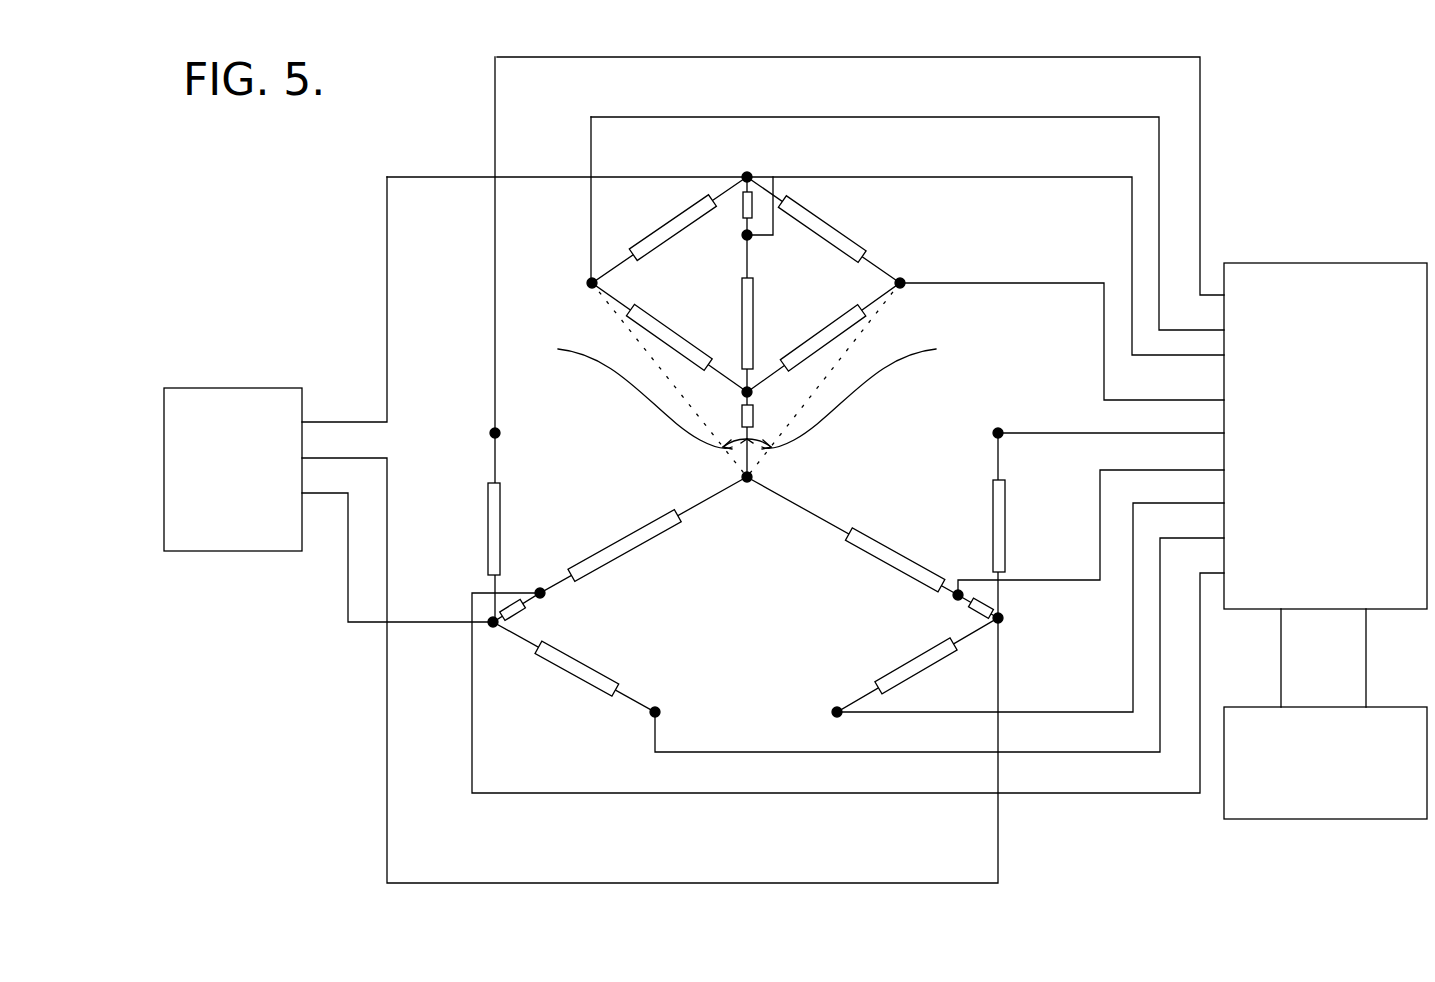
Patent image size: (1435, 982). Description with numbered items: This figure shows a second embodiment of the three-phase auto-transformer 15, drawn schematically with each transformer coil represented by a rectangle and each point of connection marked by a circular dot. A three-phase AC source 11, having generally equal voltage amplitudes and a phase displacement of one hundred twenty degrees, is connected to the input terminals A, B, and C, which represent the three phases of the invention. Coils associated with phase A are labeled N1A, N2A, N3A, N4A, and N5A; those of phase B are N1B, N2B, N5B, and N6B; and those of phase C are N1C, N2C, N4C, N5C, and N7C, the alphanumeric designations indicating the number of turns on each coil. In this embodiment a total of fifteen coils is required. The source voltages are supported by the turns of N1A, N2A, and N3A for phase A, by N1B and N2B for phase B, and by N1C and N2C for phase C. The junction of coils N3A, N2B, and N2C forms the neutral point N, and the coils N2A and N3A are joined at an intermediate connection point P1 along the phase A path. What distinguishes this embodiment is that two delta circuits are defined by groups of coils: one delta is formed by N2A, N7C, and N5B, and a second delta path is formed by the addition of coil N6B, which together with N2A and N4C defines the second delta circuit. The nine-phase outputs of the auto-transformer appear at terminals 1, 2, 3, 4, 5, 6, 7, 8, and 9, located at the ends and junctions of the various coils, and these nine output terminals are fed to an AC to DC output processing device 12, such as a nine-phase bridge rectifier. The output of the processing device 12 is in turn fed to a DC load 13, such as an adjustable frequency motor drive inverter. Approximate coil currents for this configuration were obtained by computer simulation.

The AC source 11 is at (222, 388).
The AC to DC output processing device 12 is at (1308, 263).
The DC load 13 is at (1416, 707).
The auto-transformer 15 is at (905, 425).
The output terminal 1 is at (750, 242).
The output terminal 2 is at (912, 268).
The output terminal 3 is at (1000, 430).
The output terminal 4 is at (955, 600).
The output terminal 5 is at (832, 712).
The output terminal 6 is at (660, 712).
The output terminal 7 is at (545, 598).
The output terminal 8 is at (492, 433).
The output terminal 9 is at (590, 283).
The terminal A is at (750, 173).
The terminal B is at (1003, 620).
The terminal C is at (492, 627).
The neutral point N is at (747, 484).
The tap point P1 is at (754, 392).
The coil N1A is at (753, 203).
The coil N2A is at (742, 311).
The coil N3A is at (740, 415).
The coil N4A is at (1005, 520).
The coil N5A is at (487, 497).
The coil N1B is at (980, 608).
The coil N2B is at (938, 554).
The coil N5B is at (862, 219).
The coil N6B is at (685, 338).
The coil N1C is at (505, 607).
The coil N2C is at (622, 542).
The coil N4C is at (668, 228).
The coil N5C is at (938, 661).
The coil N7C is at (823, 332).